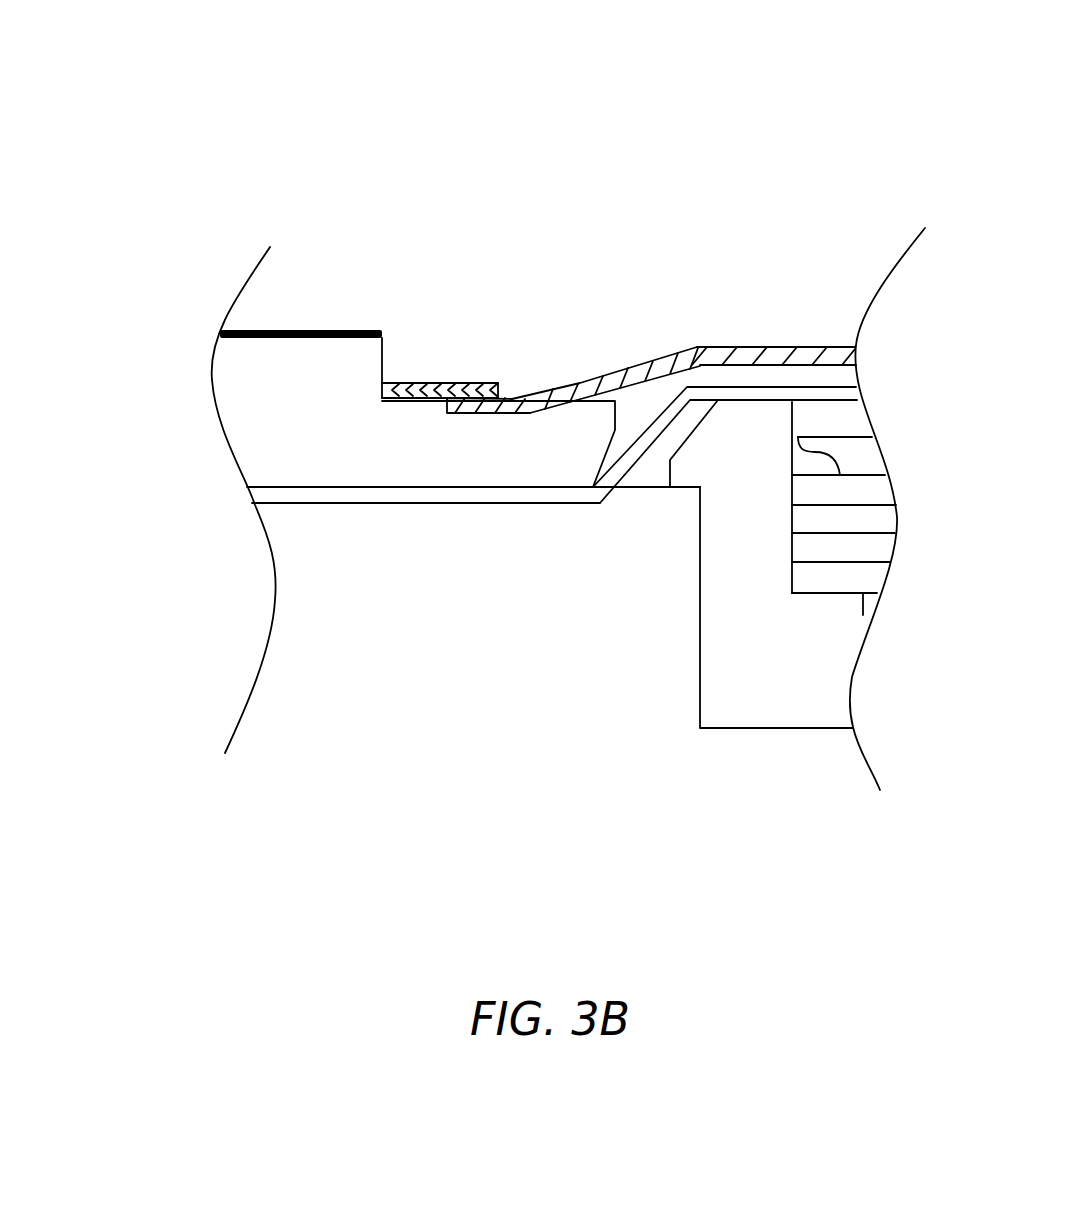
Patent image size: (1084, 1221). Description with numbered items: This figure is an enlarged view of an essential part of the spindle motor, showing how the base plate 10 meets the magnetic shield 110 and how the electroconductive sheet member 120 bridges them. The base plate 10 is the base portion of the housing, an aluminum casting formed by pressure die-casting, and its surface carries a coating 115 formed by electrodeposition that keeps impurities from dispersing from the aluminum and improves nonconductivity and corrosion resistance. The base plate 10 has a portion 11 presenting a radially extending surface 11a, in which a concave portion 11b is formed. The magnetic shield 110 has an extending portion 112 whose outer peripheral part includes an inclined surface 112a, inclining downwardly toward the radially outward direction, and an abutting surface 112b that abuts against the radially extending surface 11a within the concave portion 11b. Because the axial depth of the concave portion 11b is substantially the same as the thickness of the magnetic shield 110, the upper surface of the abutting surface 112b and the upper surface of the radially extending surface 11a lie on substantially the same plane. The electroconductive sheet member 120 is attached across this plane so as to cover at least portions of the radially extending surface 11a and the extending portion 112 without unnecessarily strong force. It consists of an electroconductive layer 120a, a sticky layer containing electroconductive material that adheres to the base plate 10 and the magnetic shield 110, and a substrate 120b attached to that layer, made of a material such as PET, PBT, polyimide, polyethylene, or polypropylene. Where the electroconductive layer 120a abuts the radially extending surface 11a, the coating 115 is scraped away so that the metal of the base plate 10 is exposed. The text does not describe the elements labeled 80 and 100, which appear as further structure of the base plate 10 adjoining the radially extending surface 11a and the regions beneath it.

The base plate 10 is at (765, 703).
The radially extending surface portion 11 is at (619, 551).
The radially extending surface 11a is at (463, 418).
The concave portion 11b is at (583, 418).
The multilayer wiring structure 80 is at (843, 550).
The insulating layer 100 is at (362, 495).
The magnetic shield 110 is at (723, 352).
The extending portion 112 is at (588, 230).
The inclined surface 112a is at (633, 372).
The abutting surface 112b is at (530, 400).
The coating 115 is at (333, 330).
The electroconductive sheet member 120 is at (443, 352).
The electroconductive layer 120a is at (423, 399).
The substrate 120b is at (433, 380).